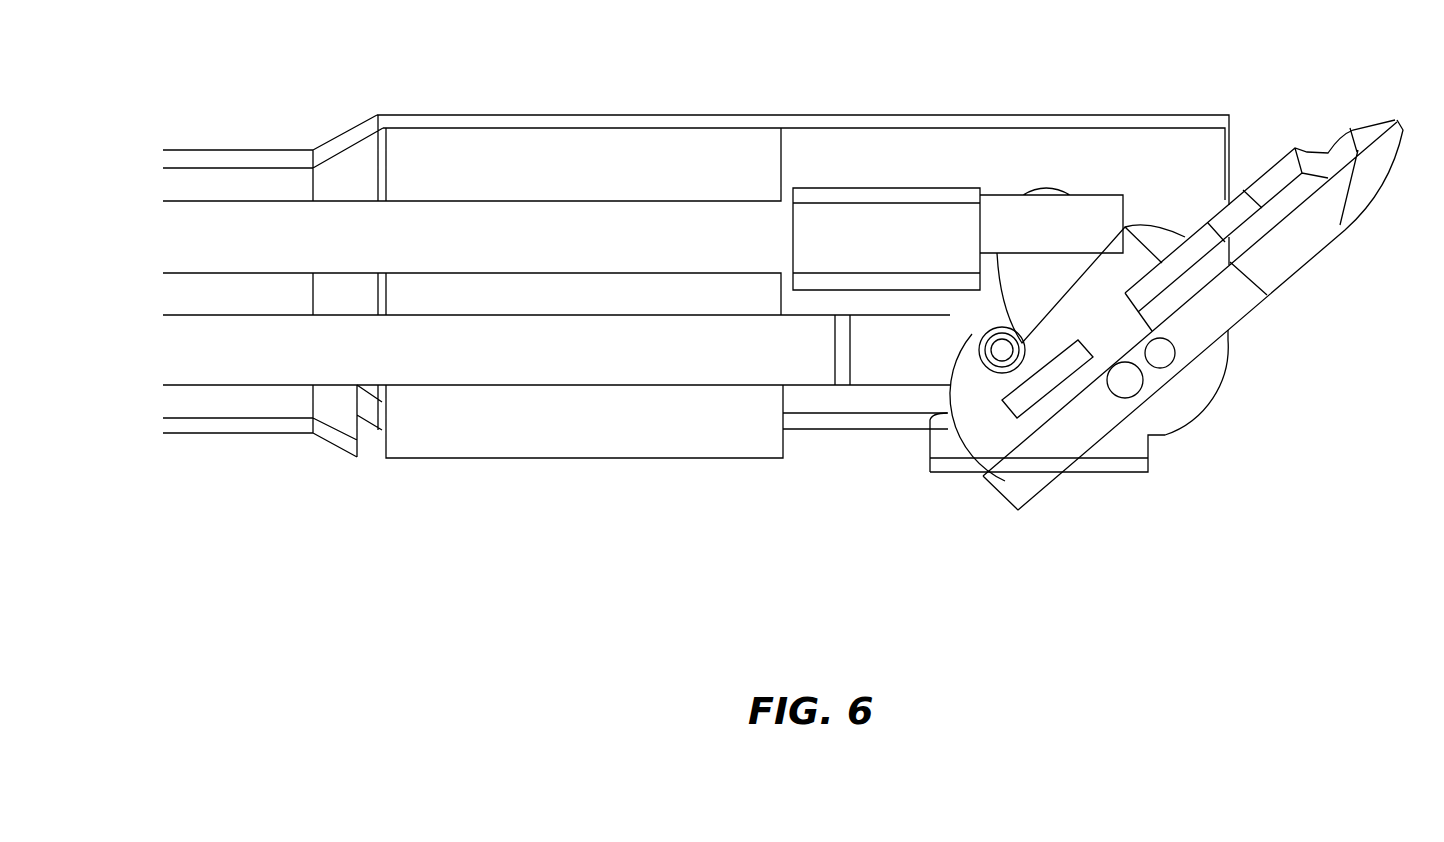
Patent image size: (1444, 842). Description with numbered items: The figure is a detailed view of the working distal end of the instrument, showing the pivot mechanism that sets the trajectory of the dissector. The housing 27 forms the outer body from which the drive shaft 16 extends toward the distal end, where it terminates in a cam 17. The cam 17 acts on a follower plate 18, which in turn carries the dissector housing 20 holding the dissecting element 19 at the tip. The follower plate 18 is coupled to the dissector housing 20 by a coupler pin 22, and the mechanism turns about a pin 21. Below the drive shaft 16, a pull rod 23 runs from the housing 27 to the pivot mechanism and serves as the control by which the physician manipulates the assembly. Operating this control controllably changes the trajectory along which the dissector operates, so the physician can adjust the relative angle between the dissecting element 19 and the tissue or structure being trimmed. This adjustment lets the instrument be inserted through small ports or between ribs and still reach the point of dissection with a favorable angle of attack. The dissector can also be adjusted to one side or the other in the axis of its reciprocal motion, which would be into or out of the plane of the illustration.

The drive shaft 16 is at (618, 245).
The cam 17 is at (1075, 230).
The follower plate 18 is at (1047, 290).
The dissecting element 19 is at (1308, 165).
The dissector housing 20 is at (1307, 228).
The pin 21 is at (1002, 355).
The coupler pin 22 is at (1173, 377).
The pull rod 23 is at (692, 355).
The housing 27 is at (462, 115).